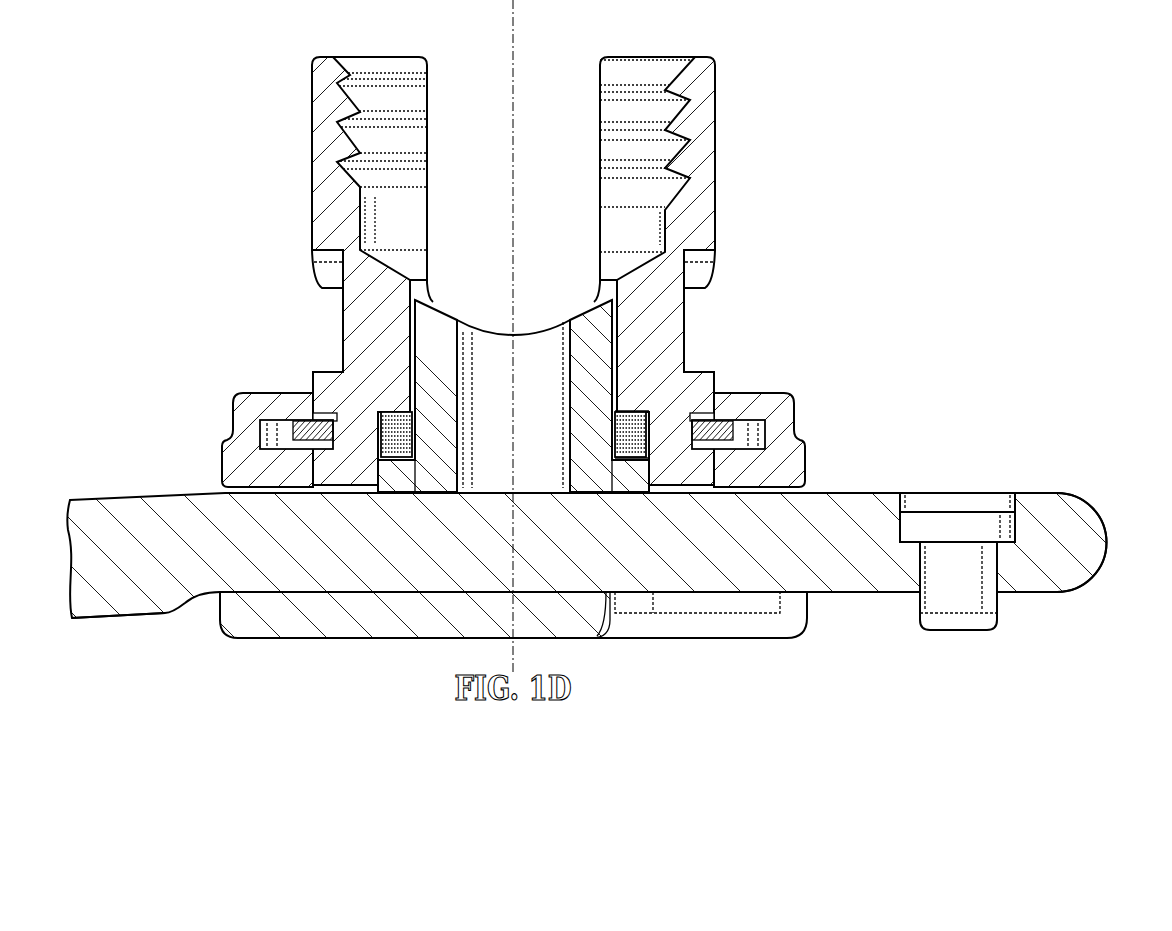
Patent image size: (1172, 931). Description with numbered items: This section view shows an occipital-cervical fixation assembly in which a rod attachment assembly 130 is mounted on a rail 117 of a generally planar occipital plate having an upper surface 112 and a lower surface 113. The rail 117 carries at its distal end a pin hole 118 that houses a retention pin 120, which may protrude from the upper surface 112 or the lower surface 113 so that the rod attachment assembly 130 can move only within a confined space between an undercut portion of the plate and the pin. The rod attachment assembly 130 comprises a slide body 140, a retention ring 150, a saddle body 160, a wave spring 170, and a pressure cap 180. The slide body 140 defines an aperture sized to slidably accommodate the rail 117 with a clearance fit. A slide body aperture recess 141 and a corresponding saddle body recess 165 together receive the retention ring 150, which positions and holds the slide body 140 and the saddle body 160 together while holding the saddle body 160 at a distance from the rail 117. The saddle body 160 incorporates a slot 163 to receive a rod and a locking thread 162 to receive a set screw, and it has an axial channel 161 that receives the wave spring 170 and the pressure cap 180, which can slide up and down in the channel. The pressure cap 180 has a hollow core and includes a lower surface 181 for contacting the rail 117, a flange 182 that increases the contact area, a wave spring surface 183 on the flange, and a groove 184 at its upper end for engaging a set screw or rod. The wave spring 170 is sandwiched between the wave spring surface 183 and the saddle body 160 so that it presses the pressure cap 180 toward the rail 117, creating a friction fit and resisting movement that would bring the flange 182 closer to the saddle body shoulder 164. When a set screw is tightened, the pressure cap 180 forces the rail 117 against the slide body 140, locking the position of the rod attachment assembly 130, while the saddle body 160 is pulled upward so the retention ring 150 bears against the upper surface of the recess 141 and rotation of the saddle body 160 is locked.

The upper surface 112 is at (163, 496).
The lower surface 113 is at (126, 618).
The rail 117 is at (1108, 545).
The pin hole 118 is at (968, 500).
The retention pin 120 is at (956, 633).
The rod attachment assembly 130 is at (762, 639).
The slide body 140 is at (800, 432).
The slide body aperture recess 141 is at (749, 433).
The retention ring 150 is at (281, 428).
The saddle body 160 is at (312, 90).
The axial channel 161 is at (511, 127).
The locking thread 162 is at (379, 98).
The slot 163 is at (428, 220).
The saddle body shoulder 164 is at (628, 408).
The saddle body recess 165 is at (702, 414).
The wave spring 170 is at (400, 412).
The pressure cap 180 is at (443, 303).
The lower surface 181 is at (472, 500).
The flange 182 is at (624, 492).
The wave spring surface 183 is at (620, 456).
The groove 184 is at (580, 311).